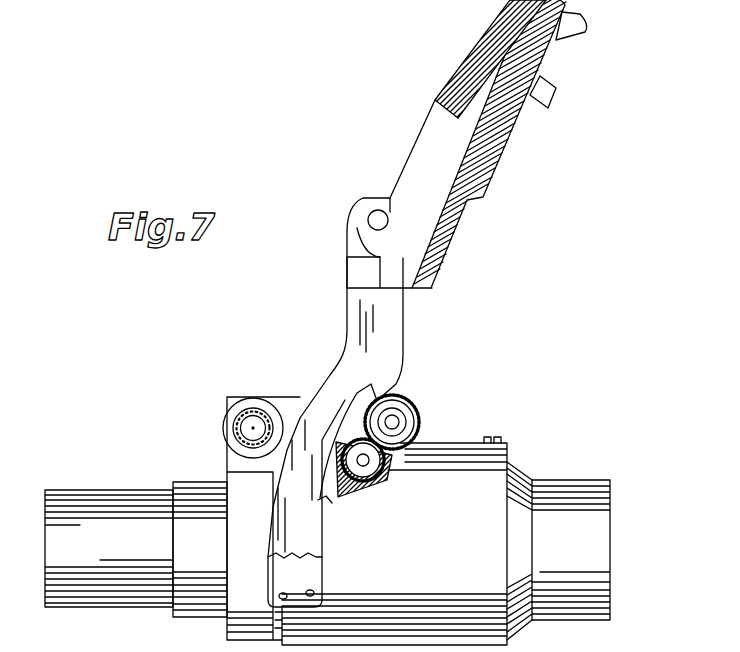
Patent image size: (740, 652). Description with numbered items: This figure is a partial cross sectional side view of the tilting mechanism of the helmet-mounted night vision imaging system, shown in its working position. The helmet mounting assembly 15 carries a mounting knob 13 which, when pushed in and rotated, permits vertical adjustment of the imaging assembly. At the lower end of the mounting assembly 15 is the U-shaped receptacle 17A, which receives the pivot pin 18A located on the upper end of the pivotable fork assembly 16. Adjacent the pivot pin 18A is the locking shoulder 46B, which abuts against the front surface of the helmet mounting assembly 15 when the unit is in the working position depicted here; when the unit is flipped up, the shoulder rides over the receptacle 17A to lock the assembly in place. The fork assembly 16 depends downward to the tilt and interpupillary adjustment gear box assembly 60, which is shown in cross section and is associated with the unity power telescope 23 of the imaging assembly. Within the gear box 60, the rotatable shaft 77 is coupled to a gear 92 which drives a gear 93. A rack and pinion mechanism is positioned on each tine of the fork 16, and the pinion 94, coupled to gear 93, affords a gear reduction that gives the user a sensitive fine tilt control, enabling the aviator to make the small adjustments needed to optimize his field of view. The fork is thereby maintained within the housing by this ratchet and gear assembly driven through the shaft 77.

The mounting knob 13 is at (505, 3).
The helmet mounting assembly 15 is at (415, 213).
The fork assembly 16 is at (380, 317).
The U-shaped receptacle 17A is at (348, 228).
The pivot pin 18A is at (378, 209).
The unity power telescope 23 is at (460, 500).
The locking shoulder 46B is at (362, 275).
The tilt and interpupillary adjustment gear box assembly 60 is at (406, 403).
The shaft 77 is at (392, 422).
The gear 92 is at (392, 397).
The gear 93 is at (372, 478).
The pinion 94 is at (325, 500).